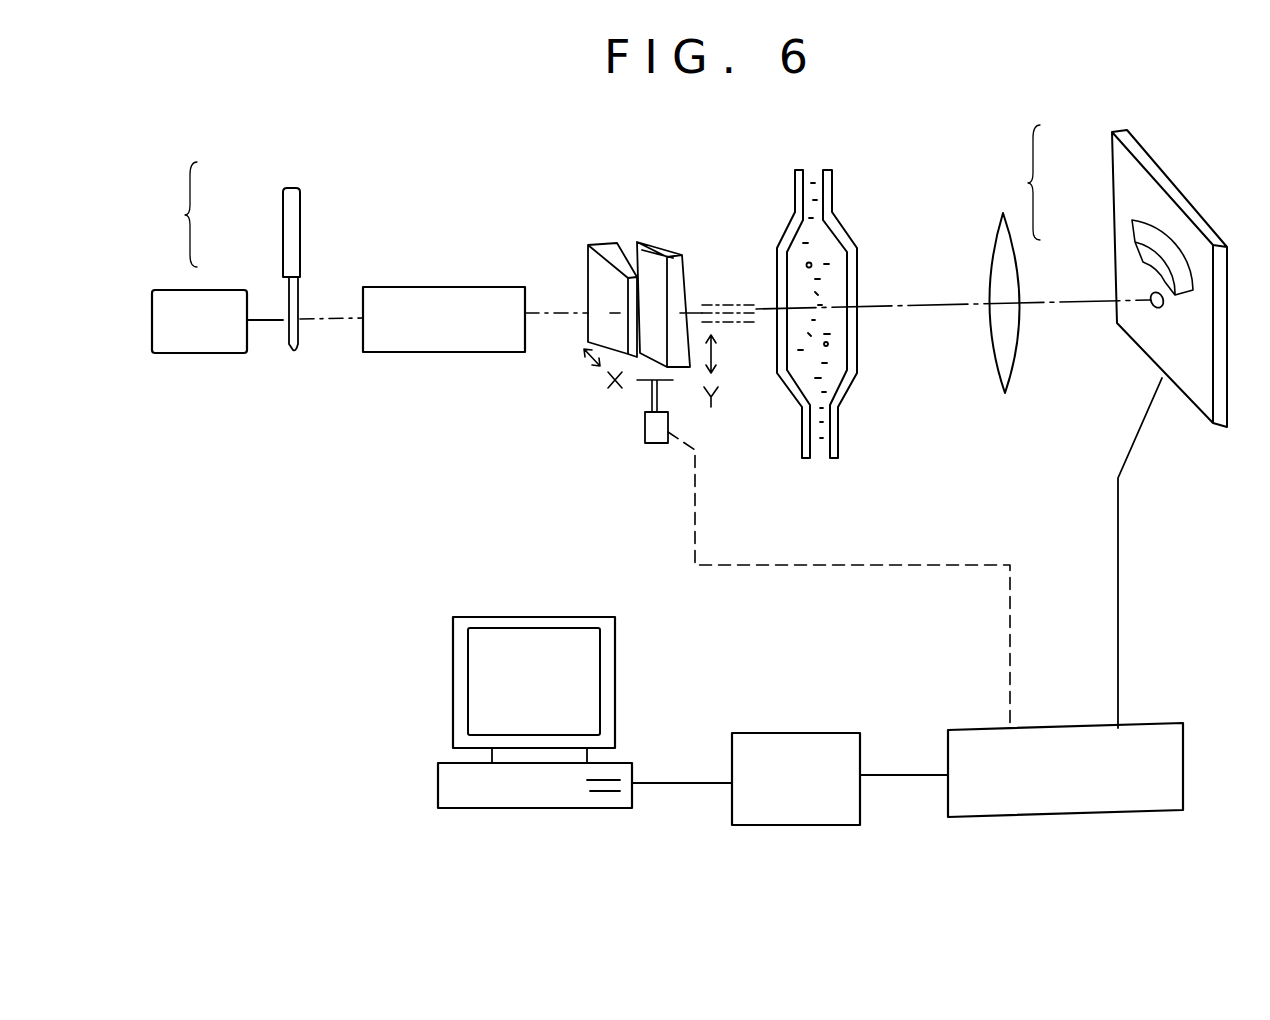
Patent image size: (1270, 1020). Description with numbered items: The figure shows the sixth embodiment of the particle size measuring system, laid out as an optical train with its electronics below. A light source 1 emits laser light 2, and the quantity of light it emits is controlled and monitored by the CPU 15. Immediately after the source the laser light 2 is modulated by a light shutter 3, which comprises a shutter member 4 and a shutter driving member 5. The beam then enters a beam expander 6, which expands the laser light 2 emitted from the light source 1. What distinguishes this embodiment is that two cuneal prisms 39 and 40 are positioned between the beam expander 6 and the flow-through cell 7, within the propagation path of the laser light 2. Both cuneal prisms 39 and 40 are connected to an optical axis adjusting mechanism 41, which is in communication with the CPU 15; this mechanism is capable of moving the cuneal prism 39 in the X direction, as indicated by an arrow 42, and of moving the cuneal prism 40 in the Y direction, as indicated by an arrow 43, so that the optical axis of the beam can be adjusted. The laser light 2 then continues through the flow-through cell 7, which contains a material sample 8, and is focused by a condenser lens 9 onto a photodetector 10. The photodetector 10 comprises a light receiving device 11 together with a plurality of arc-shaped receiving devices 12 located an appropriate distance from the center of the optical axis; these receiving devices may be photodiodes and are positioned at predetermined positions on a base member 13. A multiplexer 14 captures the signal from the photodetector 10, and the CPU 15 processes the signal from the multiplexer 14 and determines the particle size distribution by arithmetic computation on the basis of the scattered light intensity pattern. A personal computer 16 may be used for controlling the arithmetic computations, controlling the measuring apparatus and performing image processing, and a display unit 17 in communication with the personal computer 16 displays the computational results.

The light source 1 is at (183, 290).
The laser light 2 is at (273, 325).
The light shutter 3 is at (181, 214).
The shutter member 4 is at (290, 305).
The shutter driving member 5 is at (283, 228).
The beam expander 6 is at (453, 287).
The flow-through cell 7 is at (783, 230).
The material sample 8 is at (820, 250).
The condenser lens 9 is at (990, 255).
The photodetector 10 is at (1018, 182).
The light receiving device 11 is at (1150, 298).
The arc-shaped receiving devices 12 is at (1132, 250).
The base member 13 is at (1133, 183).
The multiplexer 14 is at (1057, 817).
The CPU 15 is at (790, 825).
The personal computer 16 is at (438, 790).
The display unit 17 is at (453, 683).
The cuneal prism 39 is at (600, 270).
The cuneal prism 40 is at (653, 267).
The optical axis adjusting mechanism 41 is at (645, 430).
The arrow 42 is at (594, 362).
The arrow 43 is at (716, 355).